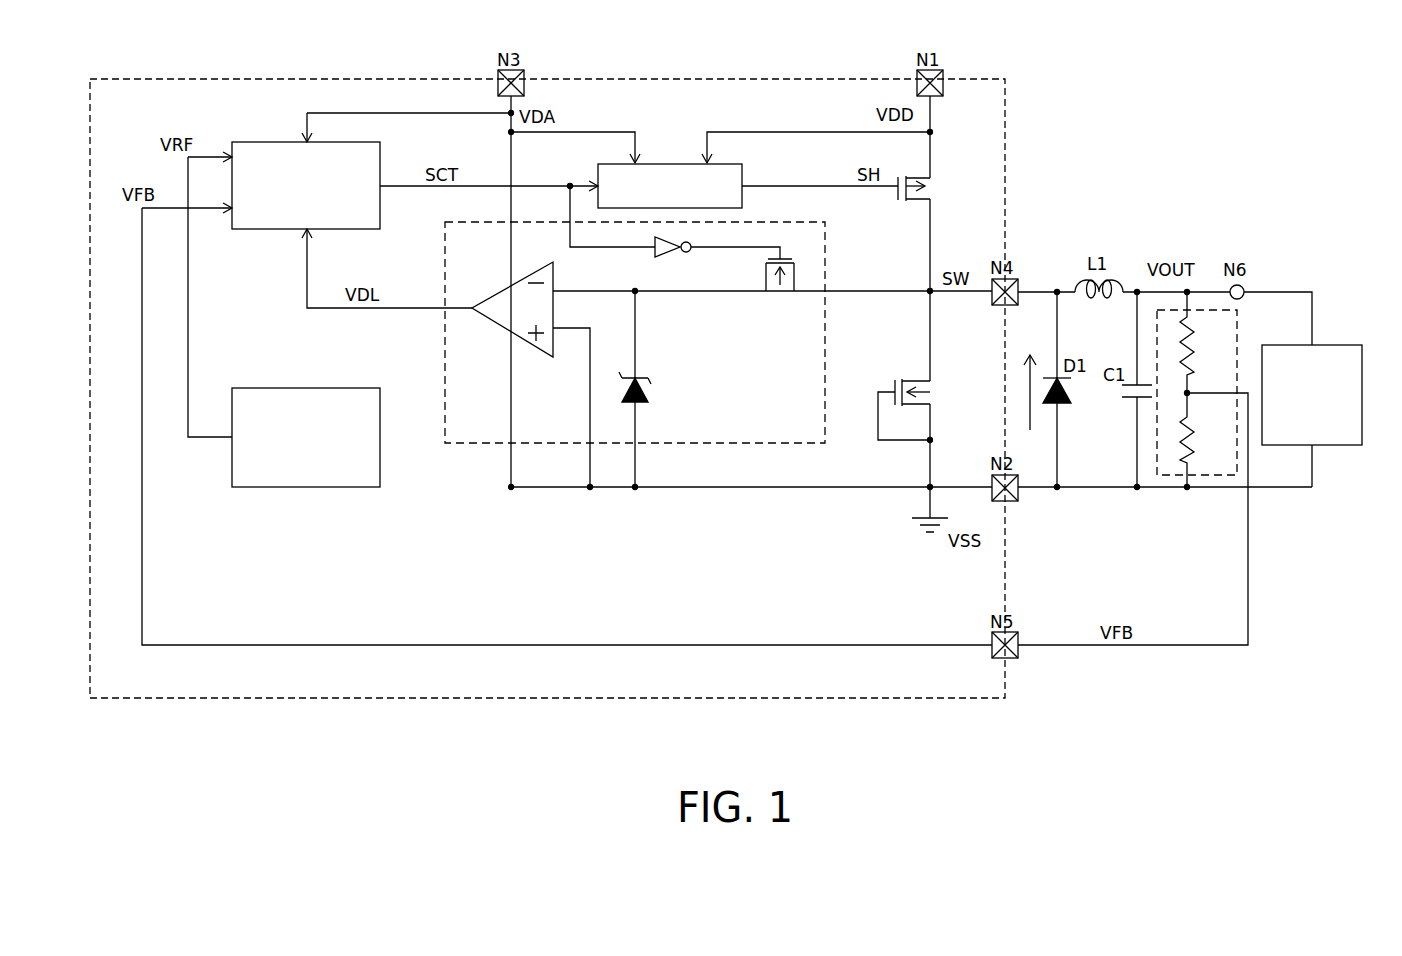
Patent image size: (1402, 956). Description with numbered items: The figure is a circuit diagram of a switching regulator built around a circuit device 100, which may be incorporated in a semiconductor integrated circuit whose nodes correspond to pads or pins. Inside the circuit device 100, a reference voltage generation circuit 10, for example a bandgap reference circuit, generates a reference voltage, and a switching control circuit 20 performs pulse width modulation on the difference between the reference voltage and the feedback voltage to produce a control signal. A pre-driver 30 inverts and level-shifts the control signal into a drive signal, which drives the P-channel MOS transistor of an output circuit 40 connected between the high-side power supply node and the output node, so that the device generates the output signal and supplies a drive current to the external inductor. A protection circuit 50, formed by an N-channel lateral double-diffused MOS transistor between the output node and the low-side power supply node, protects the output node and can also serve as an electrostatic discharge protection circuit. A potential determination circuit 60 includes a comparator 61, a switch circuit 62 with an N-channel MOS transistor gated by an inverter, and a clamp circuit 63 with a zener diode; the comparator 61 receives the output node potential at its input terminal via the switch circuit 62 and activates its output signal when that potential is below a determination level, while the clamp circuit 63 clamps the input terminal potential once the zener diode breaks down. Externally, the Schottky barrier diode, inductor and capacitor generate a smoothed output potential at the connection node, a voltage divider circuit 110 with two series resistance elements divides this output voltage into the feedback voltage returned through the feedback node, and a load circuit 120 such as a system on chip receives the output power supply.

The circuit device 100 is at (174, 80).
The switching control circuit 20 is at (245, 141).
The reference voltage generation circuit 10 is at (338, 388).
The pre-driver 30 is at (677, 164).
The output circuit 40 is at (948, 160).
The protection circuit 50 is at (948, 376).
The potential determination circuit 60 is at (735, 443).
The comparator 61 is at (499, 290).
The switch circuit 62 is at (754, 319).
The clamp circuit 63 is at (692, 388).
The voltage divider circuit 110 is at (1210, 477).
The load circuit 120 is at (1325, 345).